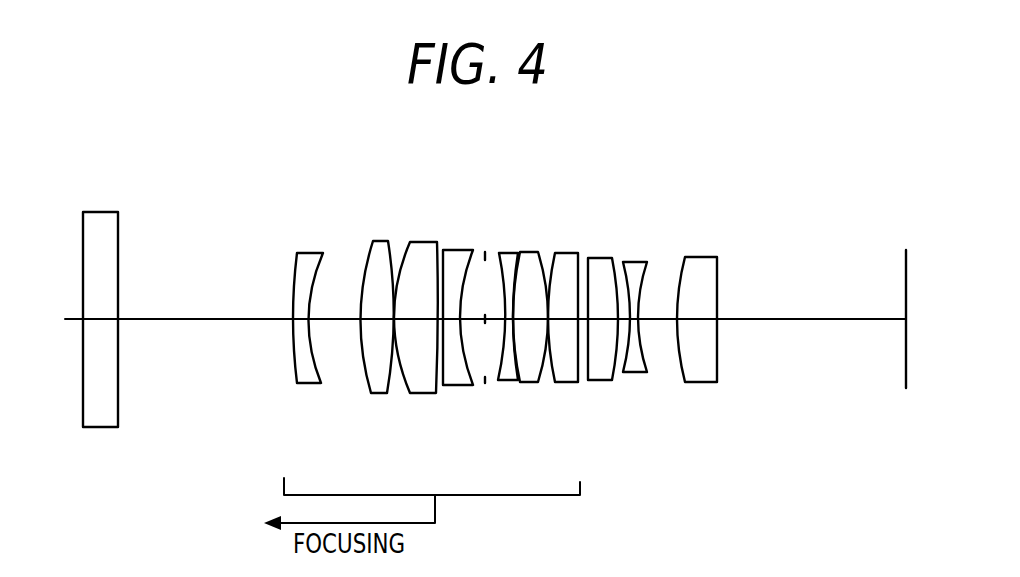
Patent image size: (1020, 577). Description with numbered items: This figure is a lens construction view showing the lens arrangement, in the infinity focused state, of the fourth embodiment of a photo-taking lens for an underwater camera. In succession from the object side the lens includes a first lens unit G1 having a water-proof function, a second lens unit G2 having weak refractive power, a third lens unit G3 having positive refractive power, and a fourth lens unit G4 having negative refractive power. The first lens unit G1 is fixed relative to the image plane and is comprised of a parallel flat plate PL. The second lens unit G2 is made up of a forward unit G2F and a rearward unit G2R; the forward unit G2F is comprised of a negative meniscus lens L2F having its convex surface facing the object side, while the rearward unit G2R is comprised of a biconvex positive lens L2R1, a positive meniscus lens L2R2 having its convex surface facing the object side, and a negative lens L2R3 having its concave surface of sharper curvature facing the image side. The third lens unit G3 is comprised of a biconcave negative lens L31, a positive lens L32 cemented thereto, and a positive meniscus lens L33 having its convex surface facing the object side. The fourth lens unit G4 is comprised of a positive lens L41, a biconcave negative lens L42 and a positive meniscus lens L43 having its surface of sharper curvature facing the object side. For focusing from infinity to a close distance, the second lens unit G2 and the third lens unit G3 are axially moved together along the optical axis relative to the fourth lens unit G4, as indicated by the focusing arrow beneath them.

The first lens unit G1 is at (127, 200).
The parallel flat plate PL is at (107, 408).
The second lens unit G2 is at (455, 183).
The forward unit G2F is at (333, 237).
The rearward unit G2R is at (475, 237).
The negative meniscus lens L2F is at (298, 353).
The biconvex positive lens L2R1 is at (375, 375).
The positive meniscus lens L2R2 is at (420, 383).
The negative lens L2R3 is at (458, 377).
The third lens unit G3 is at (580, 235).
The biconcave negative lens L31 is at (508, 383).
The positive lens L32 is at (527, 383).
The positive meniscus lens L33 is at (568, 383).
The fourth lens unit G4 is at (728, 235).
The positive lens L41 is at (612, 380).
The biconcave negative lens L42 is at (646, 375).
The positive meniscus lens L43 is at (702, 377).